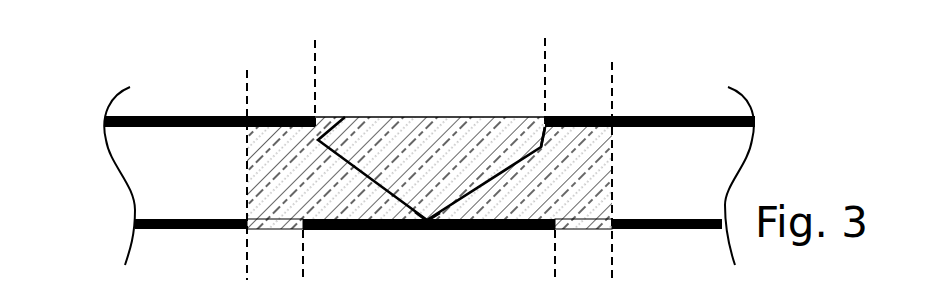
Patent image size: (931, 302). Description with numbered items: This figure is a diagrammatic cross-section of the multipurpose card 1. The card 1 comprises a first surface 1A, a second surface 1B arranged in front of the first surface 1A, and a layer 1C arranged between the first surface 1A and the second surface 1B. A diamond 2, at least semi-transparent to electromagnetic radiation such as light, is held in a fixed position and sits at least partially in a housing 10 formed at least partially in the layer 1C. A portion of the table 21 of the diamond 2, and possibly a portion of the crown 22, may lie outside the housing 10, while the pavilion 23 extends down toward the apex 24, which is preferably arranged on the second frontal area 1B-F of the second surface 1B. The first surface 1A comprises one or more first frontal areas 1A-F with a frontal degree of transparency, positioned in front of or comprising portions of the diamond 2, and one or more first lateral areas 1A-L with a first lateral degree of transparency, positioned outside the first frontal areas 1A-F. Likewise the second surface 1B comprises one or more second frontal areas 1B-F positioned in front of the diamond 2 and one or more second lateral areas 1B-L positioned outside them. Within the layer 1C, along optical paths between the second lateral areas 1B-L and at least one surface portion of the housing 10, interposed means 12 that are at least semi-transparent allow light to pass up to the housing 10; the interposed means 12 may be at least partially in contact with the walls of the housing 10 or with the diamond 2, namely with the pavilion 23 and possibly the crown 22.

The multipurpose card 1 is at (75, 127).
The first surface 1A is at (630, 114).
The second surface 1B is at (204, 234).
The layer 1C is at (703, 175).
The first lateral areas 1A-L is at (290, 97).
The second lateral areas 1B-L is at (283, 1).
The first frontal areas 1A-F is at (437, 92).
The second frontal areas 1B-F is at (222, 1).
The diamond 2 is at (357, 192).
The housing 10 is at (542, 140).
The interposed means 12 is at (270, 163).
The table 21 is at (390, 117).
The crown 22 is at (329, 138).
The pavilion 23 is at (513, 165).
The apex 24 is at (431, 212).